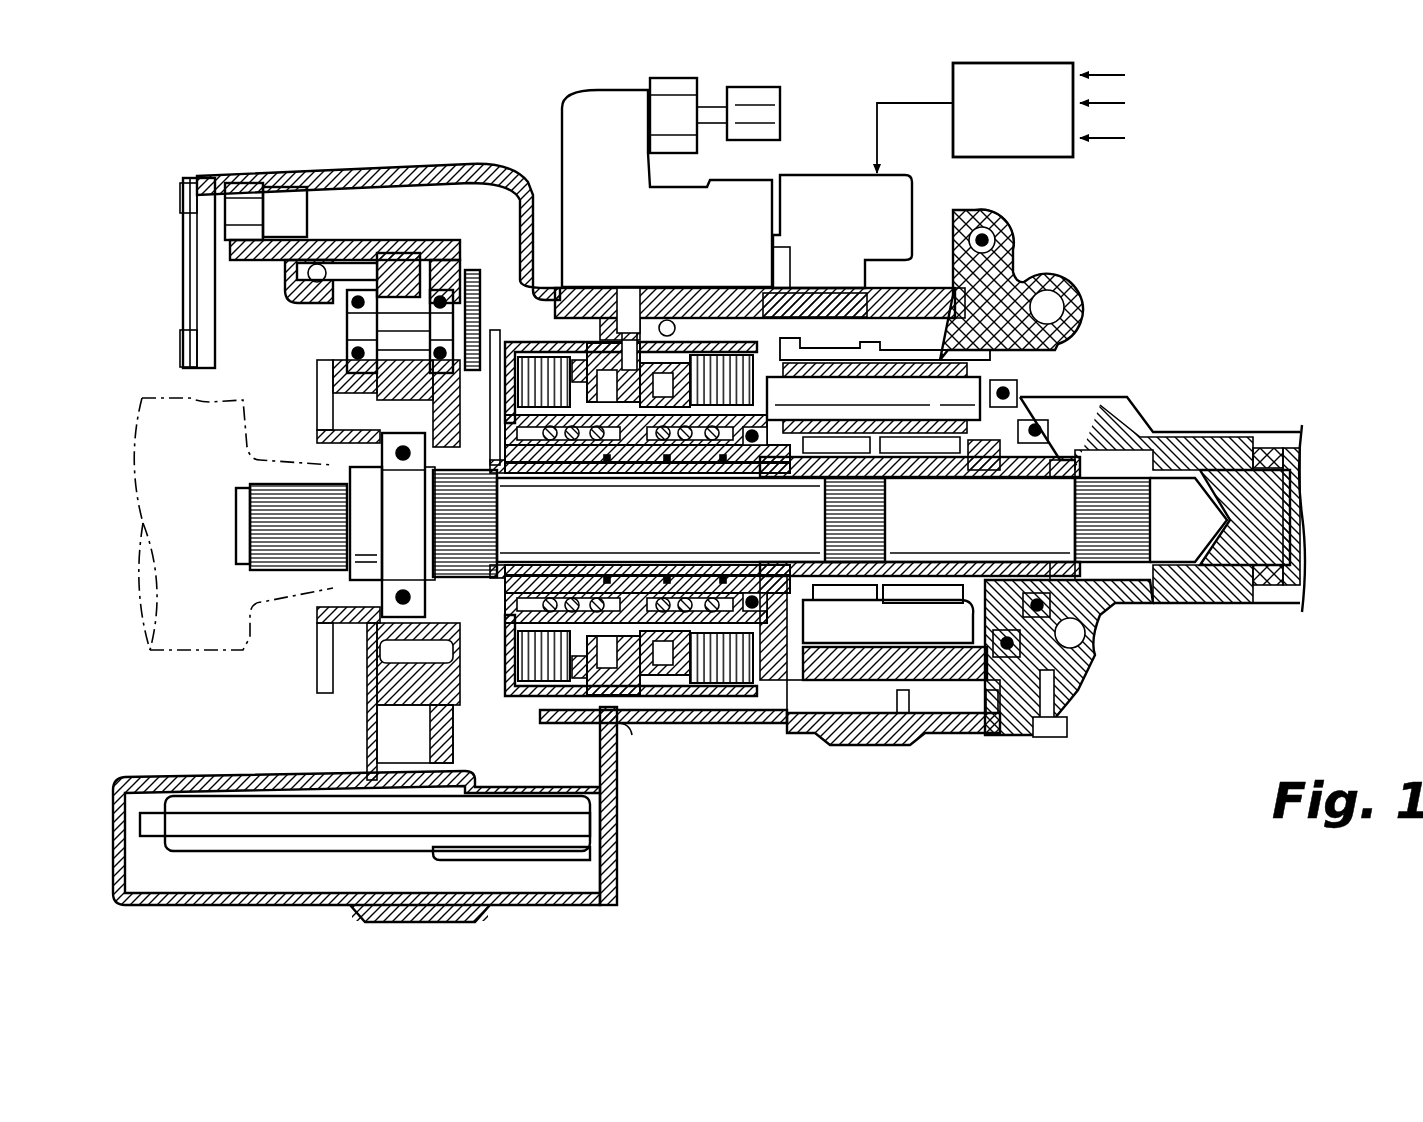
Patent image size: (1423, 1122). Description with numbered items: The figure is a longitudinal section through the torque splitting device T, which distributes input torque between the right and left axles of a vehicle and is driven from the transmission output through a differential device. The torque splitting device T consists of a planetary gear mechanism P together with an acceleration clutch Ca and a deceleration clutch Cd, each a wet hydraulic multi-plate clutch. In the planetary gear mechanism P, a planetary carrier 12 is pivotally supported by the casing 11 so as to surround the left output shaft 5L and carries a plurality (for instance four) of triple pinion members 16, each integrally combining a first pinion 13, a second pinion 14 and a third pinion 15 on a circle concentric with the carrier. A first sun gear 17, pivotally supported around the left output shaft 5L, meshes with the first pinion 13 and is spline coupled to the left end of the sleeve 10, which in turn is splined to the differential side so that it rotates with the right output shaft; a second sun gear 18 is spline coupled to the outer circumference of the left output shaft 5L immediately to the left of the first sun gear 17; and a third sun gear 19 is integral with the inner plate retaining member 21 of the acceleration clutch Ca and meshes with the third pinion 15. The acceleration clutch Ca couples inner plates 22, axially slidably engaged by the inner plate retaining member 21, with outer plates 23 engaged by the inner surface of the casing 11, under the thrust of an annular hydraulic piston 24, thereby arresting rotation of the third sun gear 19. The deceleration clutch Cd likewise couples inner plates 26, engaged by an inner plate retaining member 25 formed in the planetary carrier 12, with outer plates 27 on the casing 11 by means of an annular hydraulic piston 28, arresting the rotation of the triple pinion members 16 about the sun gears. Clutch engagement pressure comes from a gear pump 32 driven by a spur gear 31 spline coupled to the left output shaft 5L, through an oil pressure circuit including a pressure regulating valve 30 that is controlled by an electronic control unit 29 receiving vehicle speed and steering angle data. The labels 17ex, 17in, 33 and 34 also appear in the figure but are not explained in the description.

The left output shaft 5L is at (1148, 560).
The sleeve 10 is at (1225, 437).
The casing 11 is at (993, 720).
The planetary carrier 12 is at (920, 600).
The first pinion 13 is at (1013, 275).
The second pinion 14 is at (1000, 238).
The third pinion 15 is at (990, 215).
The triple pinion members 16 is at (1112, 180).
The first sun gear 17 is at (1014, 837).
The external oil passage 17ex is at (905, 700).
The internal oil passage 17in is at (993, 583).
The second sun gear 18 is at (853, 600).
The third sun gear 19 is at (800, 583).
The inner plate retaining member 21 is at (505, 612).
The inner plates 22 is at (520, 662).
The outer plates 23 is at (573, 660).
The annular hydraulic piston 24 is at (613, 687).
The inner plate retaining member 25 is at (790, 400).
The inner plates 26 is at (748, 385).
The outer plates 27 is at (713, 383).
The annular hydraulic piston 28 is at (660, 370).
The electronic control unit 29 is at (1030, 127).
The pressure regulating valve 30 is at (893, 180).
The spur gear 31 is at (490, 395).
The gear pump 32 is at (413, 262).
The bearing 33 is at (1073, 470).
The thrust bearing 34 is at (990, 445).
The acceleration clutch Ca is at (545, 702).
The deceleration clutch Cd is at (722, 699).
The planetary gear mechanism P is at (995, 355).
The torque splitting device T is at (518, 160).